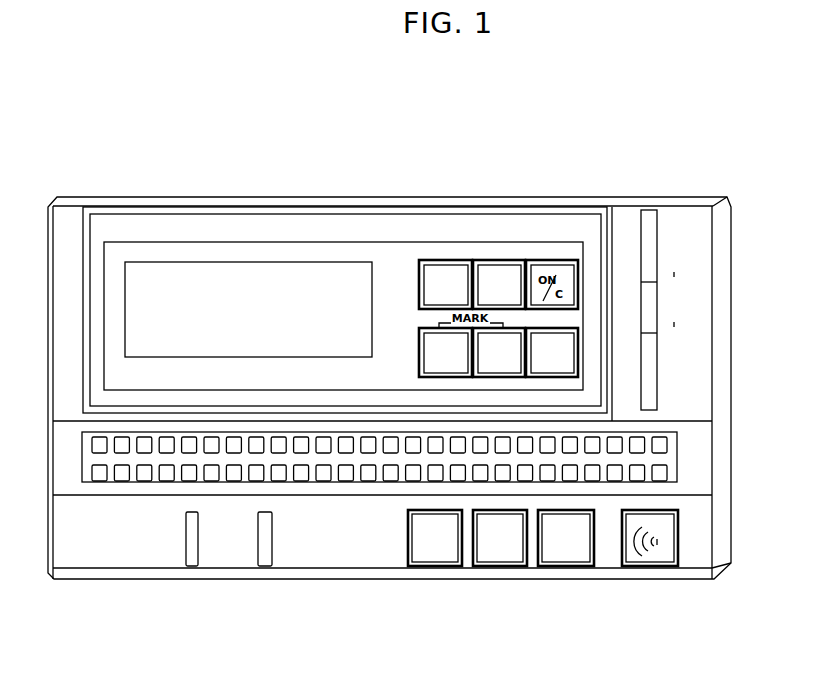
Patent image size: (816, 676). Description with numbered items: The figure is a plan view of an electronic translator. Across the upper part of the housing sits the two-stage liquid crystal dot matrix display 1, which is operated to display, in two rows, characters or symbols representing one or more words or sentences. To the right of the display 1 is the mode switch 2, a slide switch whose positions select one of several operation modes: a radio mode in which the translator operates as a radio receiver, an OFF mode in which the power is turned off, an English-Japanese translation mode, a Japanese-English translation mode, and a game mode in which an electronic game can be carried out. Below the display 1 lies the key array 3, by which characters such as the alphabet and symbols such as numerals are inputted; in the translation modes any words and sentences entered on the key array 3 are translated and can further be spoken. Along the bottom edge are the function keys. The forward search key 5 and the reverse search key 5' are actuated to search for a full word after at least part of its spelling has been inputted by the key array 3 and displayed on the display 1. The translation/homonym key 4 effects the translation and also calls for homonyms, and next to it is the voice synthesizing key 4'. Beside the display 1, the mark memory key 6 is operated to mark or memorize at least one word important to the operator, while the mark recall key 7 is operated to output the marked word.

The two-stage liquid crystal dot matrix display 1 is at (343, 275).
The mode switch 2 is at (645, 223).
The key array 3 is at (668, 457).
The translation/homonym key 4 is at (566, 570).
The voice synthesizing key 4' is at (650, 577).
The forward search key 5 is at (435, 577).
The reverse search key 5' is at (500, 577).
The mark memory key 6 is at (419, 362).
The mark recall key 7 is at (508, 377).